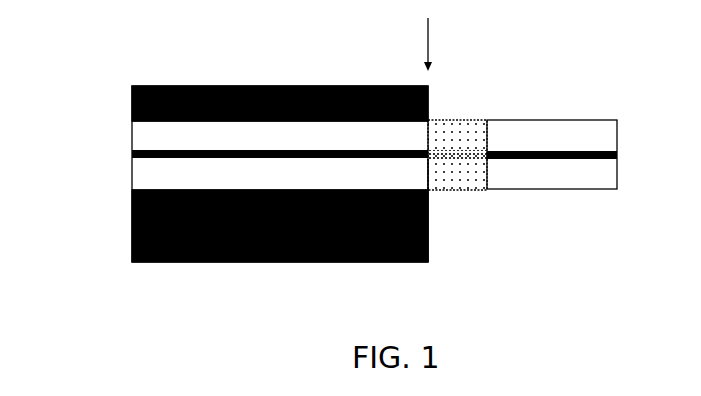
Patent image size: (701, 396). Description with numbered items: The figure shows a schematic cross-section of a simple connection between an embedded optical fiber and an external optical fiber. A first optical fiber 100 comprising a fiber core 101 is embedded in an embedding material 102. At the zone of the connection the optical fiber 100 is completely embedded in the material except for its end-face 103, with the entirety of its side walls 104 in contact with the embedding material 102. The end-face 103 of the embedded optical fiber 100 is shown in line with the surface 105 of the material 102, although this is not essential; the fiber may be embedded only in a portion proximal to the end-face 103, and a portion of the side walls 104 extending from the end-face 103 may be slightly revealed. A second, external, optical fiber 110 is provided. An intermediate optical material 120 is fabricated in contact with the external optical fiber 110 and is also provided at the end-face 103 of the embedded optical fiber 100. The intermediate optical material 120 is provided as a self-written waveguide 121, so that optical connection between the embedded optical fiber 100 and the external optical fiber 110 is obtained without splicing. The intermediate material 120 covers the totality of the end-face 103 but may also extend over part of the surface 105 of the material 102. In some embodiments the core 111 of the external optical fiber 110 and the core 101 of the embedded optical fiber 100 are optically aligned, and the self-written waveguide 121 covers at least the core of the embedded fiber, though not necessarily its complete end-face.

The first optical fiber 100 is at (132, 130).
The fiber core 101 is at (230, 150).
The embedding material 102 is at (212, 246).
The end-face 103 is at (438, 178).
The side walls 104 is at (172, 128).
The surface 105 is at (439, 242).
The external optical fiber 110 is at (562, 120).
The core 111 is at (595, 159).
The intermediate optical material 120 is at (450, 120).
The self-written waveguide 121 is at (457, 150).